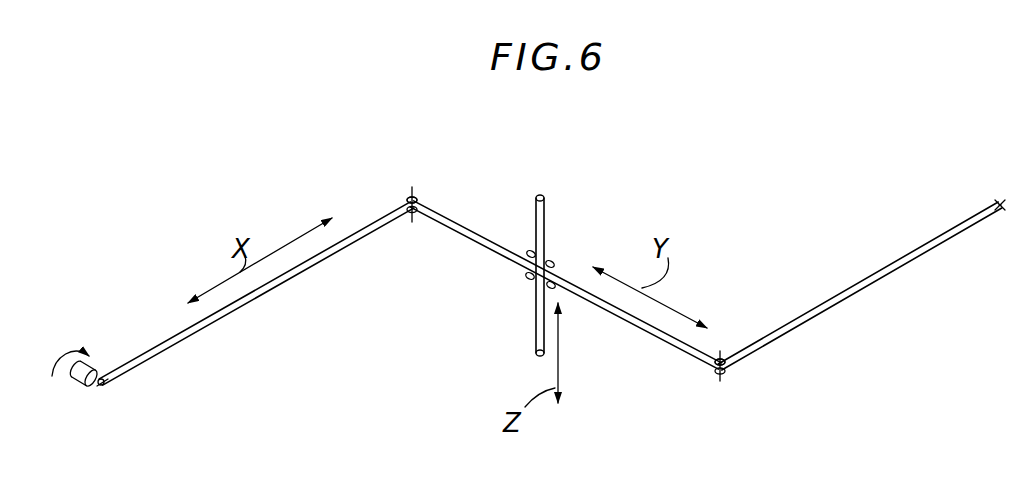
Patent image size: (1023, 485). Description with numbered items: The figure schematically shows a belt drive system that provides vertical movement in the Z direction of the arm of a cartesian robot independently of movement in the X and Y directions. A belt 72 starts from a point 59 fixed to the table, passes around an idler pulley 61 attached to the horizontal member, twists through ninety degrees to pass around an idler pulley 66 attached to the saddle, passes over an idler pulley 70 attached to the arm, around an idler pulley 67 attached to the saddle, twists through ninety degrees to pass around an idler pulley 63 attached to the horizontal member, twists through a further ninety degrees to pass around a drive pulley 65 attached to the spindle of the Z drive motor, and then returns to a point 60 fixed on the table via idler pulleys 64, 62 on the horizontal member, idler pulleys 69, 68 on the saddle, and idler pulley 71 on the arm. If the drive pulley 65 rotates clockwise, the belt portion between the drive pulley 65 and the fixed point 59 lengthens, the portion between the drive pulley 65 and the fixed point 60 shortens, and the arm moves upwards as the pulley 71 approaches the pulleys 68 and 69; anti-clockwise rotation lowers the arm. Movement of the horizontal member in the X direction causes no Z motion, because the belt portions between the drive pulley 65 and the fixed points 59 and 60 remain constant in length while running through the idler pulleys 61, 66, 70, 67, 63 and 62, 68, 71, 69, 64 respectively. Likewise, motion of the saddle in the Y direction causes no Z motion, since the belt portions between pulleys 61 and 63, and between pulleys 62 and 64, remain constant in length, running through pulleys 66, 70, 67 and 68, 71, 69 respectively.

The fixed point 59 is at (997, 201).
The fixed point 60 is at (1000, 213).
The idler pulley 61 is at (723, 358).
The idler pulley 62 is at (717, 374).
The idler pulley 63 is at (417, 197).
The idler pulley 64 is at (410, 213).
The drive pulley 65 is at (101, 386).
The idler pulley 66 is at (553, 259).
The idler pulley 67 is at (529, 250).
The idler pulley 68 is at (554, 288).
The idler pulley 69 is at (527, 279).
The idler pulley 70 is at (545, 193).
The idler pulley 71 is at (538, 358).
The belt 72 is at (885, 267).